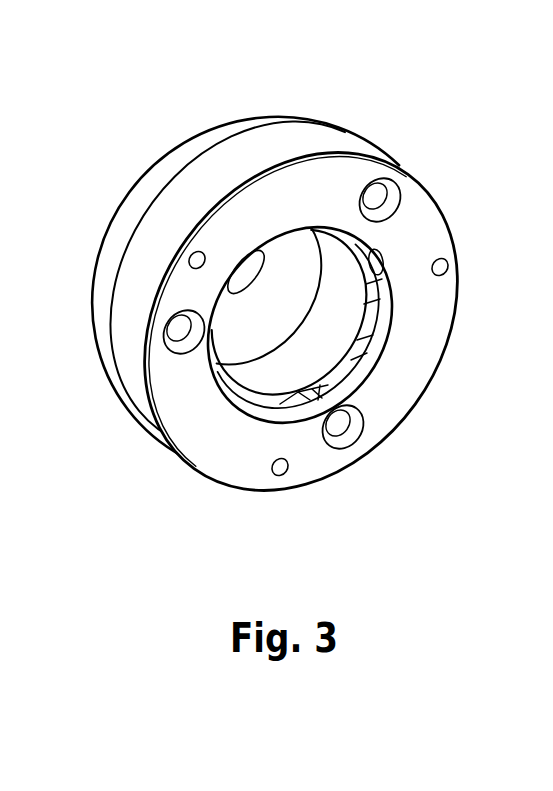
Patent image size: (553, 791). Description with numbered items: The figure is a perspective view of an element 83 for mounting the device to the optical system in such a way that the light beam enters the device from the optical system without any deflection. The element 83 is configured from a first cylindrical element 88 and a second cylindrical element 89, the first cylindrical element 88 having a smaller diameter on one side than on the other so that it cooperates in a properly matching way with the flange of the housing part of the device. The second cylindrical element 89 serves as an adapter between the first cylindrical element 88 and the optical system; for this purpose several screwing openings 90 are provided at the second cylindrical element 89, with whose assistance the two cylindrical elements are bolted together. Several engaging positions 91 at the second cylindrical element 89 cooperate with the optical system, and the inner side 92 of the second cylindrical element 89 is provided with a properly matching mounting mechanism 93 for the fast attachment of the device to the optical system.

The element 83 is at (312, 123).
The first cylindrical element 88 is at (163, 176).
The second cylindrical element 89 is at (137, 393).
The screwing openings 90 is at (383, 203).
The engaging positions 91 is at (188, 262).
The inner side 92 is at (385, 251).
The mounting mechanism 93 is at (316, 389).